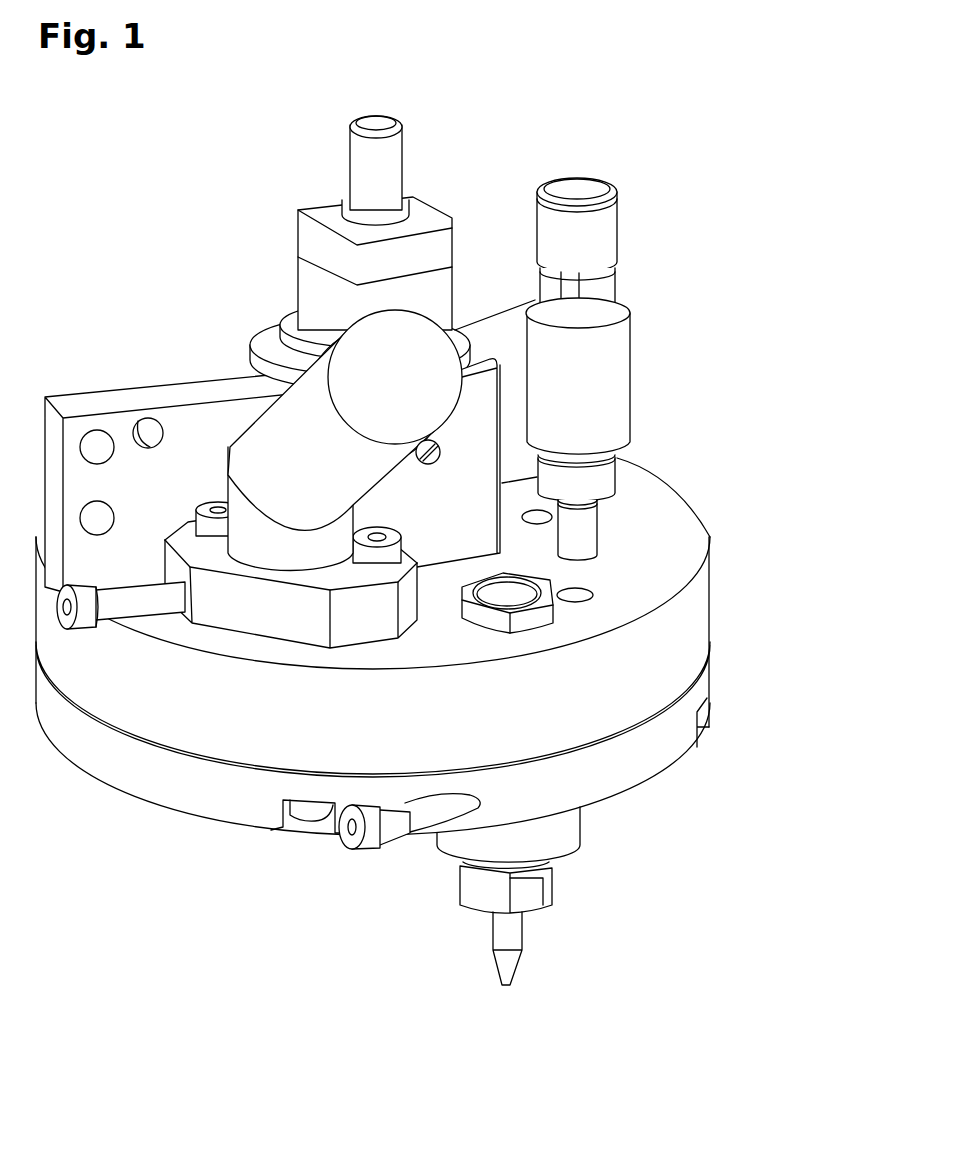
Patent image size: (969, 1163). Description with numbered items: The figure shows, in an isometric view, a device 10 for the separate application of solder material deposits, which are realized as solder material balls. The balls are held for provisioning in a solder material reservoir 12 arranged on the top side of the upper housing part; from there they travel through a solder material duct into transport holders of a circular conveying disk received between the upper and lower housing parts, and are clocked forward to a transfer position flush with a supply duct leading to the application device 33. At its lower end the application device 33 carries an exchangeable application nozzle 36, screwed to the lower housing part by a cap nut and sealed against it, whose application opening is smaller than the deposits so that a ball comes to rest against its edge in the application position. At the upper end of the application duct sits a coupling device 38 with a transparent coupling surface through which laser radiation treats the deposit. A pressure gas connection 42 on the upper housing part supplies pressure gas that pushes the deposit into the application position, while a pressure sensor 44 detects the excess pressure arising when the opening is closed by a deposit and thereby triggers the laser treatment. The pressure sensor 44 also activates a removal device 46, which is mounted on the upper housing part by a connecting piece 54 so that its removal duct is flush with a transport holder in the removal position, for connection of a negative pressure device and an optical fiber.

The device 10 is at (520, 173).
The solder material reservoir 12 is at (312, 498).
The application device 33 is at (600, 842).
The application nozzle 36 is at (557, 943).
The coupling device 38 is at (537, 620).
The pressure gas connection 42 is at (572, 597).
The pressure sensor 44 is at (372, 842).
The removal device 46 is at (635, 373).
The connecting piece 54 is at (583, 543).